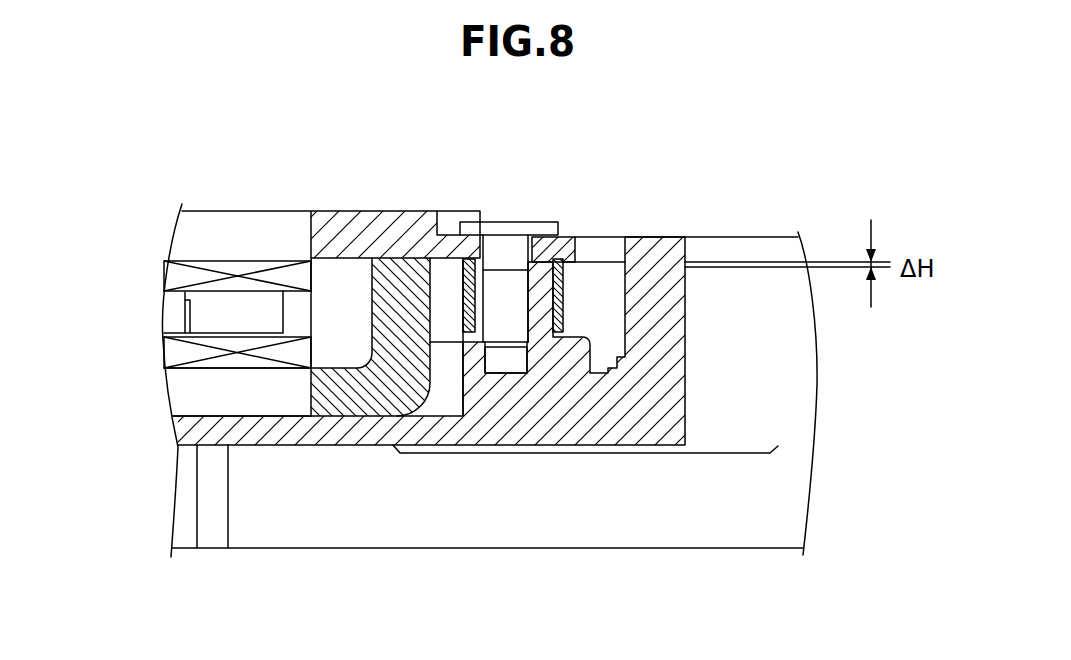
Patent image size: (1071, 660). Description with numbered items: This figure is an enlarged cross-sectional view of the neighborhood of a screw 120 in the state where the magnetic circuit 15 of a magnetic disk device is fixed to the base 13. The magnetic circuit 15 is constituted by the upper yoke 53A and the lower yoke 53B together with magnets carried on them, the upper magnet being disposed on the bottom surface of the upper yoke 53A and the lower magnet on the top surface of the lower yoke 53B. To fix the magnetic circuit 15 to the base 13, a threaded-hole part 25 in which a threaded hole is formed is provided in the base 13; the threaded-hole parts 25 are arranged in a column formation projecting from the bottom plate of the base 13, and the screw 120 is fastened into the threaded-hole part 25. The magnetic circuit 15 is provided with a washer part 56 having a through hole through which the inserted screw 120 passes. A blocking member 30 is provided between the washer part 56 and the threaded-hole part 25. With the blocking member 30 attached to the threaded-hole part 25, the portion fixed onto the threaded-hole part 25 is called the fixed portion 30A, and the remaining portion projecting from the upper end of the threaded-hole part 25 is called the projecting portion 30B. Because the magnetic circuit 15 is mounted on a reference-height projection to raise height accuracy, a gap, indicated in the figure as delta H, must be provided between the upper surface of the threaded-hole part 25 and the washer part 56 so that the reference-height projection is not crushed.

The base 13 is at (600, 432).
The magnetic circuit 15 is at (148, 312).
The threaded-hole part 25 is at (543, 327).
The blocking member 30 is at (582, 313).
The fixed portion 30A is at (463, 323).
The projecting portion 30B is at (452, 234).
The upper yoke 53A is at (322, 212).
The lower yoke 53B is at (265, 400).
The washer part 56 is at (572, 237).
The screw 120 is at (506, 253).